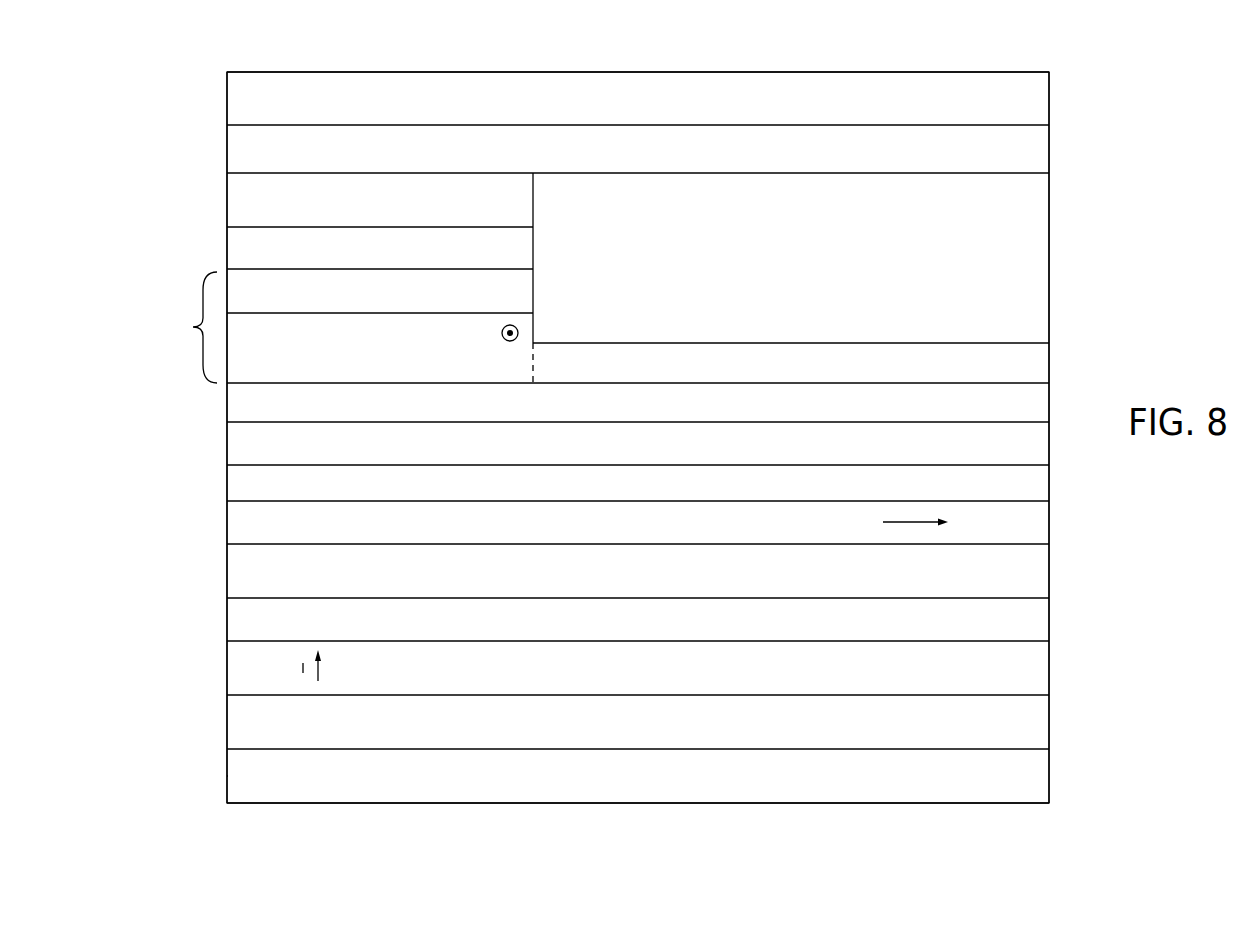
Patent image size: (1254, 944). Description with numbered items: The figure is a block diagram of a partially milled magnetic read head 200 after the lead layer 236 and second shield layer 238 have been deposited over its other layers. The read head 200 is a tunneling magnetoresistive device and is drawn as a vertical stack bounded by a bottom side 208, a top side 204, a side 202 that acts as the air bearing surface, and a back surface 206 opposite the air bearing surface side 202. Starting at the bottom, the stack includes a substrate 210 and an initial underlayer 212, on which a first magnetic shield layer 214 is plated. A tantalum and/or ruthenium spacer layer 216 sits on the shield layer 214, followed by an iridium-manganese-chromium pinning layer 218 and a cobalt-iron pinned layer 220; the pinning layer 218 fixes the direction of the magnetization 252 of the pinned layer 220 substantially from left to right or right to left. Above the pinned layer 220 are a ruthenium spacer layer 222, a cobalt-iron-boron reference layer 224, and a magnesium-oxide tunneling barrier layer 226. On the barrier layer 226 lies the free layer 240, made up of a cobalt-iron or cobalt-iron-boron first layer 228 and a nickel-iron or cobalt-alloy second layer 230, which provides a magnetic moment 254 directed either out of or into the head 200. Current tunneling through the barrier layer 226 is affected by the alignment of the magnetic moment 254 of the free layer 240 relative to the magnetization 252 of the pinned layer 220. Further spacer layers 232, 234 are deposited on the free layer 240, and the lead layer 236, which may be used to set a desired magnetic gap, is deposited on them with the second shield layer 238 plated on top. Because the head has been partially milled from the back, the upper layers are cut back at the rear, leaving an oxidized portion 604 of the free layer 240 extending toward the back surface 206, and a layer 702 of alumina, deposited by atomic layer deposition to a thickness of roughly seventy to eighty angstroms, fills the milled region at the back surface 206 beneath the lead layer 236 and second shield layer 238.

The magnetic read head 200 is at (270, 66).
The air bearing surface side 202 is at (213, 570).
The top side 204 is at (707, 63).
The back surface 206 is at (1062, 572).
The bottom side 208 is at (708, 815).
The substrate 210 is at (657, 791).
The underlayer 212 is at (657, 733).
The first magnetic shield layer 214 is at (657, 681).
The spacer layer 216 is at (657, 633).
The pinning layer 218 is at (657, 582).
The pinned layer 220 is at (657, 537).
The spacer layer 222 is at (657, 494).
The reference layer 224 is at (657, 457).
The tunneling barrier layer 226 is at (657, 413).
The first layer 228 is at (398, 362).
The second layer 230 is at (398, 305).
The spacer layer 232 is at (398, 262).
The spacer layer 234 is at (380, 205).
The lead layer 236 is at (706, 161).
The second shield layer 238 is at (706, 108).
The free layer 240 is at (193, 327).
The magnetization 252 is at (892, 523).
The magnetic moment 254 is at (518, 327).
The oxidized portion 604 is at (810, 375).
The layer of alumina 702 is at (1015, 236).